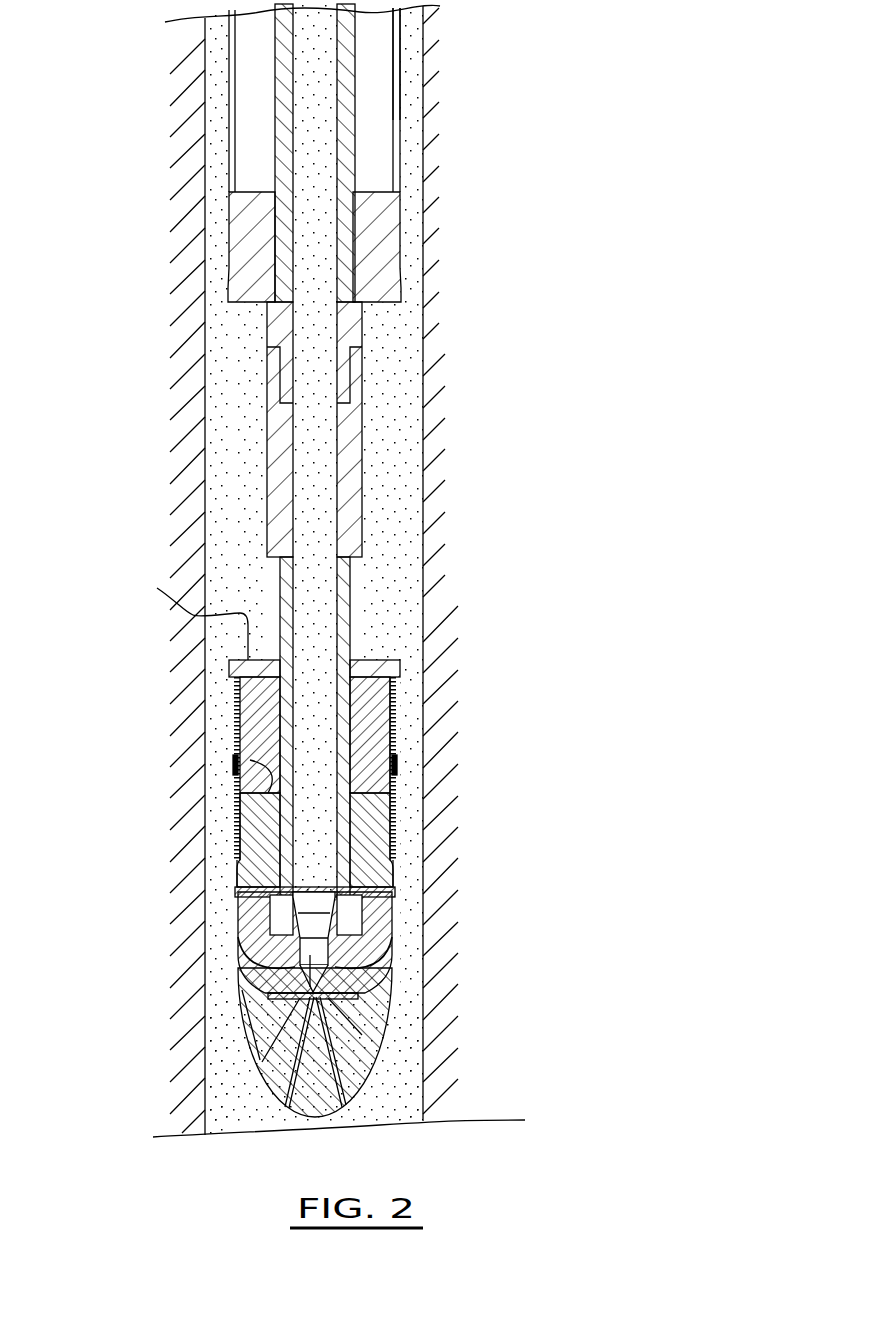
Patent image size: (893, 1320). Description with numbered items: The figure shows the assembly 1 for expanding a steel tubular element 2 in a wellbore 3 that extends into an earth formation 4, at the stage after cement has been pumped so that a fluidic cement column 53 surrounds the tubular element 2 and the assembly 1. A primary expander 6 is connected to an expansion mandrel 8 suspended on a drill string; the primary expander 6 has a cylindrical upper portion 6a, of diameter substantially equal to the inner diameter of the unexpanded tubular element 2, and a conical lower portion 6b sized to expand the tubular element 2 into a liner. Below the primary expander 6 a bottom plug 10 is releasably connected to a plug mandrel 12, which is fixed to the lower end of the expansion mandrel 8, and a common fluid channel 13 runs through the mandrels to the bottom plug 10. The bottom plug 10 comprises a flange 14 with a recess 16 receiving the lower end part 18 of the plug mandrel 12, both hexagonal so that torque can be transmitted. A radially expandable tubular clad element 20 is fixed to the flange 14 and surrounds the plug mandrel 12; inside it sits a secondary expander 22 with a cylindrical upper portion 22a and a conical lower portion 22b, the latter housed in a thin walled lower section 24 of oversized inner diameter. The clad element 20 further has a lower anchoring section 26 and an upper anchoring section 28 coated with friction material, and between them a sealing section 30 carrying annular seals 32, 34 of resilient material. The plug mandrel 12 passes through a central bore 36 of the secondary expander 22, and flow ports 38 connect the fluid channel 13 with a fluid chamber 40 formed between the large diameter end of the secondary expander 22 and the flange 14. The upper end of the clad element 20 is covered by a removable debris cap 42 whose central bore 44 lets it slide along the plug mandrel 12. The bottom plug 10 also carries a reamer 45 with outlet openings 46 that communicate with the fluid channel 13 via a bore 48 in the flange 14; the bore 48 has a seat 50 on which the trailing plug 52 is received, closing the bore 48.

The assembly 1 is at (289, 158).
The steel tubular element 2 is at (205, 228).
The wellbore 3 is at (208, 372).
The earth formation 4 is at (126, 401).
The primary expander 6 is at (400, 235).
The cylindrical upper portion 6a is at (400, 202).
The conical lower portion 6b is at (400, 283).
The expansion mandrel 8 is at (390, 450).
The bottom plug 10 is at (423, 888).
The plug mandrel 12 is at (355, 615).
The fluid channel 13 is at (320, 633).
The flange 14 is at (362, 918).
The recess 16 is at (362, 940).
The lower end part 18 is at (325, 990).
The tubular clad element 20 is at (324, 768).
The secondary expander 22 is at (331, 782).
The cylindrical upper portion 22a is at (238, 820).
The conical lower portion 22b is at (235, 830).
The thin walled lower section 24 is at (232, 870).
The lower anchoring section 26 is at (393, 827).
The upper anchoring section 28 is at (397, 732).
The sealing section 30 is at (398, 767).
The annular seal 32 is at (400, 798).
The annular seal 34 is at (510, 808).
The central bore 36 is at (233, 768).
The flow ports 38 is at (236, 920).
The fluid chamber 40 is at (236, 893).
The debris cap 42 is at (184, 610).
The central bore 44 is at (237, 707).
The reamer 45 is at (258, 1022).
The outlet openings 46 is at (300, 1046).
The bore 48 is at (308, 992).
The seat 50 is at (245, 952).
The trailing plug 52 is at (345, 998).
The fluidic cement column 53 is at (395, 508).